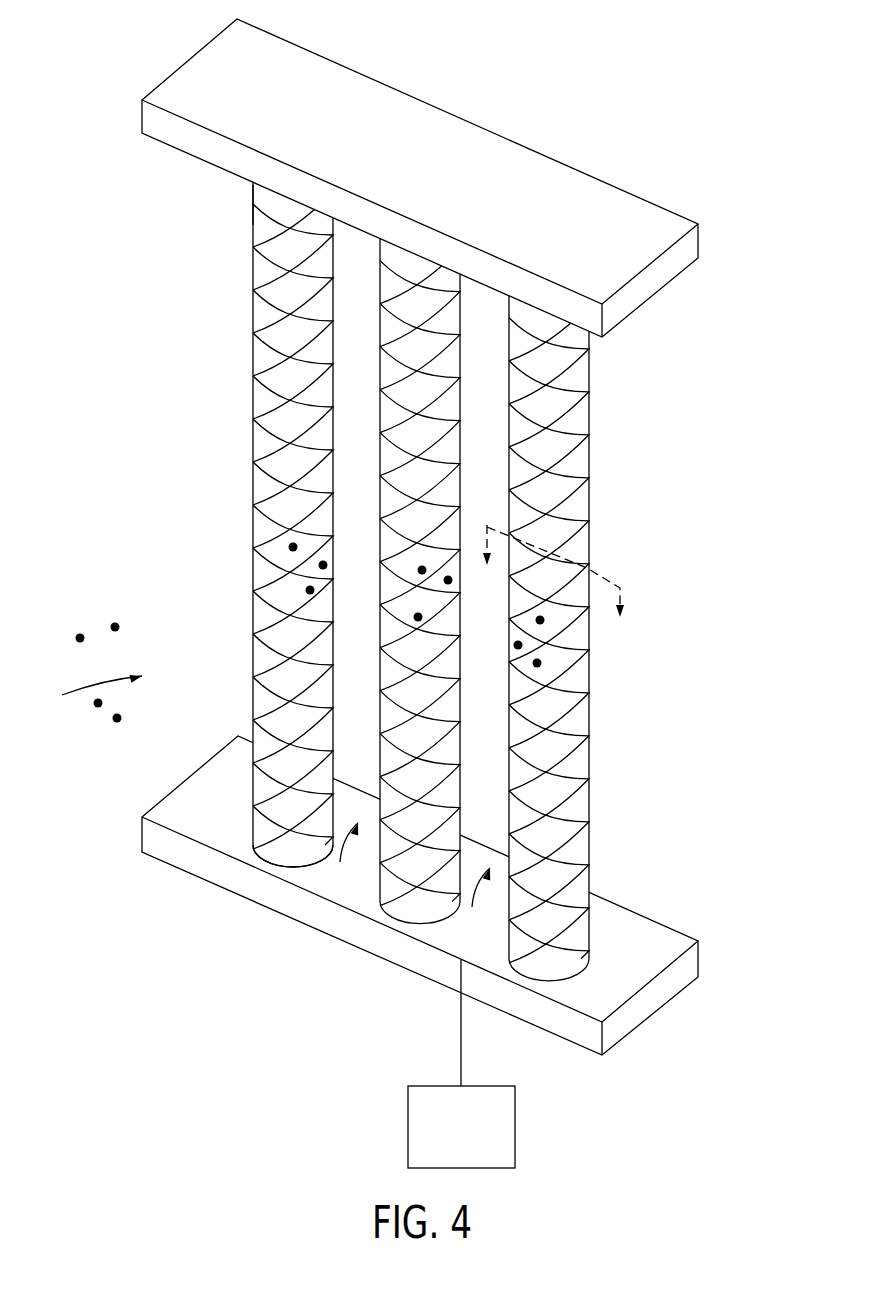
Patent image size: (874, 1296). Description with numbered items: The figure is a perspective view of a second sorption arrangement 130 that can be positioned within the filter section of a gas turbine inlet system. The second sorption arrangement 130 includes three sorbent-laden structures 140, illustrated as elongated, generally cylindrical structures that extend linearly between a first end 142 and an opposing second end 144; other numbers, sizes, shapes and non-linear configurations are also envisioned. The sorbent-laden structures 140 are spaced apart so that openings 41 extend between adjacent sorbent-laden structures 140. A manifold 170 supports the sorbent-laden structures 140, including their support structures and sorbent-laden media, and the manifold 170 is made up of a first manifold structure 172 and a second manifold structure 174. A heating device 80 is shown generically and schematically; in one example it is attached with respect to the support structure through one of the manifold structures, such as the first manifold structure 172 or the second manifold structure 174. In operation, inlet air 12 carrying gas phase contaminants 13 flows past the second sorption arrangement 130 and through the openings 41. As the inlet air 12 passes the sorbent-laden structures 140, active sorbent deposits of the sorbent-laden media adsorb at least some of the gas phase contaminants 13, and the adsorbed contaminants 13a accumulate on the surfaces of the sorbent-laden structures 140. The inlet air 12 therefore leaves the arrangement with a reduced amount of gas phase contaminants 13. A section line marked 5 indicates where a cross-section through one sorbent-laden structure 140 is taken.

The second sorption arrangement 130 is at (84, 75).
The manifold 170 is at (735, 149).
The first manifold structure 172 is at (500, 147).
The second manifold structure 174 is at (350, 947).
The sorbent-laden structure 140 is at (267, 405).
The first end 142 is at (253, 190).
The second end 144 is at (253, 830).
The adsorbed contaminants 13a is at (293, 547).
The gas phase contaminants 13 is at (115, 626).
The inlet air 12 is at (84, 693).
The section line 5- 5 is at (554, 593).
The openings 41 is at (410, 879).
The heating device 80 is at (516, 1128).